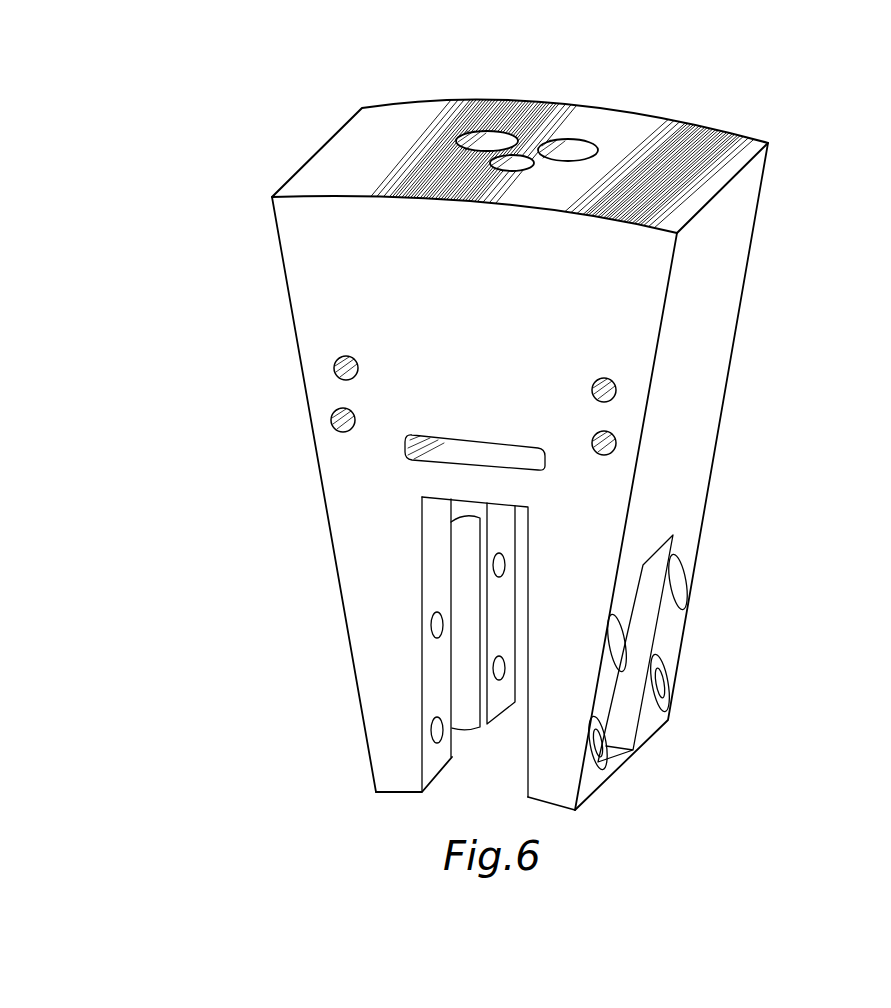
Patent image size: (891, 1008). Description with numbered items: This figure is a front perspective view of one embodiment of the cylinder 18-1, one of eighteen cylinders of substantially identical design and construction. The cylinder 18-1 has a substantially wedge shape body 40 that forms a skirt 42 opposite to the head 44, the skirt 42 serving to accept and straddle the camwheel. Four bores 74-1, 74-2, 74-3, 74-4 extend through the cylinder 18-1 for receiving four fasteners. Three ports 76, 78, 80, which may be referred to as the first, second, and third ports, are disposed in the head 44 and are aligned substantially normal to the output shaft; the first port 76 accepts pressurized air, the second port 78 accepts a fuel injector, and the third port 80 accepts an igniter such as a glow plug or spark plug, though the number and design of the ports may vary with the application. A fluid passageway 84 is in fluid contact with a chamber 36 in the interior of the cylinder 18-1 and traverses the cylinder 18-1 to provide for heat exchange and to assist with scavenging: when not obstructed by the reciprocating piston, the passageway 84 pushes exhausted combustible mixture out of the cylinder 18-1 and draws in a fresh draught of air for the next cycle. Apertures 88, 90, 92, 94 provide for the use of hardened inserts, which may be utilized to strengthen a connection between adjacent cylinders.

The cylinder 18-1 is at (806, 220).
The chamber 36 is at (490, 457).
The wedge shape body 40 is at (320, 470).
The skirt 42 is at (360, 712).
The head 44 is at (742, 317).
The bore 74-1 is at (337, 383).
The bore 74-2 is at (343, 434).
The bore 74-3 is at (612, 403).
The bore 74-4 is at (612, 456).
The first port 76 is at (490, 142).
The second port 78 is at (517, 165).
The third port 80 is at (575, 152).
The fluid passageway 84 is at (437, 457).
The aperture 88 is at (680, 584).
The aperture 90 is at (663, 700).
The aperture 92 is at (620, 640).
The aperture 94 is at (601, 750).